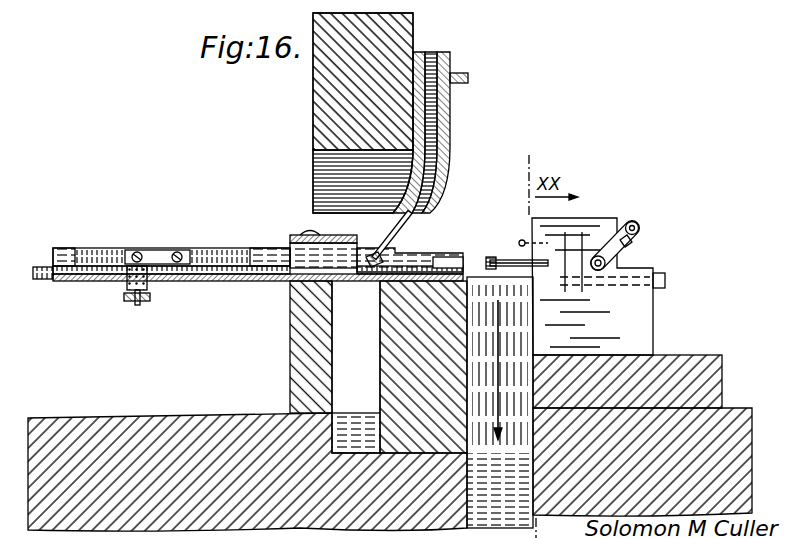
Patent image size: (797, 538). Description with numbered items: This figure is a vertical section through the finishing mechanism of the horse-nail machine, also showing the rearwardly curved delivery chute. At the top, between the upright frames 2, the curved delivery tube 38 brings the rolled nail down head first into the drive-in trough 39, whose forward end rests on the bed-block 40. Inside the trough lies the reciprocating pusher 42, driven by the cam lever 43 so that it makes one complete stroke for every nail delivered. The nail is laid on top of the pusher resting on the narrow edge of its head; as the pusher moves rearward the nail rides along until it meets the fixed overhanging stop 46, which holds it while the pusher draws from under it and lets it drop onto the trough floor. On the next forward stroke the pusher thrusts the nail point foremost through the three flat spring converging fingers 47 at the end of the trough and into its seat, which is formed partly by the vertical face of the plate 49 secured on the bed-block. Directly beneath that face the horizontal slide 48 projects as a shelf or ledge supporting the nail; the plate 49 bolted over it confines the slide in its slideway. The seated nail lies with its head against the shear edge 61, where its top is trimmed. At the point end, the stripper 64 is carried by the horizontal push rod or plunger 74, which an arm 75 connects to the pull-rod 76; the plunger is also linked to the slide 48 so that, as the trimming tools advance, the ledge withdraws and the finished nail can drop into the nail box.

The upright frames 2 is at (313, 118).
The delivery tube 38 is at (452, 138).
The drive-in trough 39 is at (317, 234).
The bed-block 40 is at (392, 336).
The pusher 42 is at (222, 254).
The cam lever 43 is at (150, 304).
The fixed overhanging stop 46 is at (350, 262).
The converging fingers 47 is at (442, 262).
The slide 48 is at (515, 270).
The plate 49 is at (584, 281).
The shear edge 61 is at (484, 262).
The stripper 64 is at (600, 272).
The push rod or plunger 74 is at (628, 262).
The arm 75 is at (640, 240).
The pull-rod 76 is at (632, 221).